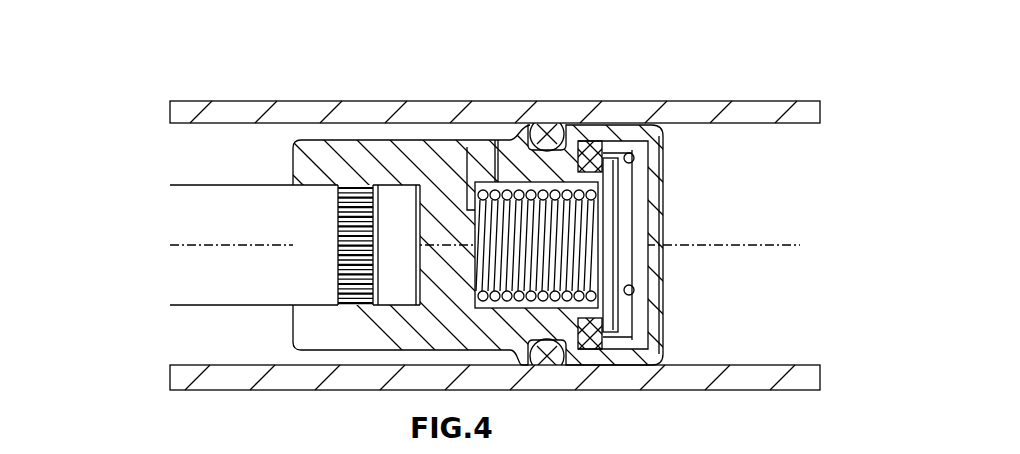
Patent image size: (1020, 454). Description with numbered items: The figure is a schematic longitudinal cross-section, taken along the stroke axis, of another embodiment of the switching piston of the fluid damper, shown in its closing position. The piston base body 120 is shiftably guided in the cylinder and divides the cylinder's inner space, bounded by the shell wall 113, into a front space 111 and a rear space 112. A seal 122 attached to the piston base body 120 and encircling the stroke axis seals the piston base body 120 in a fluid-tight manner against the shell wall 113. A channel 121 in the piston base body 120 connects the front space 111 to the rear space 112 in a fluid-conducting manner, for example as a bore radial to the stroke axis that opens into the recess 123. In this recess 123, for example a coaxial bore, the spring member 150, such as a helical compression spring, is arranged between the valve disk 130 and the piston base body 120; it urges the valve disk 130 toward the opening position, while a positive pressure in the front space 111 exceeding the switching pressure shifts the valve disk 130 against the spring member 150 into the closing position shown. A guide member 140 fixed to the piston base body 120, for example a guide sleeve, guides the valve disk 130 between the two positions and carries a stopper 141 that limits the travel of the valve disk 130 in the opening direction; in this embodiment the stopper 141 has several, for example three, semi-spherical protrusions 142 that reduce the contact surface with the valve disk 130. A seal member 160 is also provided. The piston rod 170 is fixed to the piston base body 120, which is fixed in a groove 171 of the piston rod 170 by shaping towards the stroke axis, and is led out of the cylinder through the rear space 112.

The front space 111 is at (777, 260).
The rear space 112 is at (203, 345).
The shell wall 113 is at (185, 113).
The piston base body 120 is at (325, 162).
The channel 121 is at (467, 147).
The seal 122 is at (545, 133).
The recess 123 is at (573, 187).
The valve disk 130 is at (612, 262).
The guide member 140 is at (638, 148).
The stopper 141 is at (640, 333).
The protrusion 142 is at (640, 289).
The spring member 150 is at (590, 218).
The seal member 160 is at (592, 153).
The piston rod 170 is at (193, 238).
The groove 171 is at (348, 190).